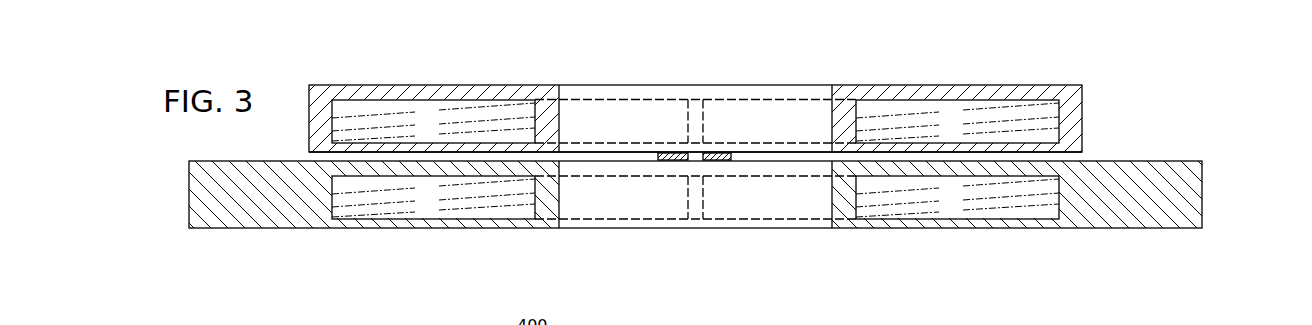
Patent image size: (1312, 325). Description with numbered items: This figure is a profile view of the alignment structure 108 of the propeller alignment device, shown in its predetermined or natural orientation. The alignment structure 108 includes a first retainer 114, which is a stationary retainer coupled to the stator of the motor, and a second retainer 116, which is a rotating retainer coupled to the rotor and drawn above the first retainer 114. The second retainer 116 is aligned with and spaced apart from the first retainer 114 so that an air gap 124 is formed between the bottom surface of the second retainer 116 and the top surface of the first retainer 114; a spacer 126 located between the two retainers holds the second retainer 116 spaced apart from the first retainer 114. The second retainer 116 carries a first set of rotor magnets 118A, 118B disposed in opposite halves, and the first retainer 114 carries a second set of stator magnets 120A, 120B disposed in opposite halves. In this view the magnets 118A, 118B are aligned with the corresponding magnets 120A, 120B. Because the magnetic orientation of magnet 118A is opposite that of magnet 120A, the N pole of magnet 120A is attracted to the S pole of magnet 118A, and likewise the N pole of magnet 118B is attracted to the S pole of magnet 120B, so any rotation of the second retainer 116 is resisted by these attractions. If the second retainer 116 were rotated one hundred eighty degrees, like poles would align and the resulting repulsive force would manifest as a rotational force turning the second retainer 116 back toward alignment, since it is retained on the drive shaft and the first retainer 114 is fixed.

The alignment structure 108 is at (1183, 107).
The first retainer 114 is at (1202, 190).
The second retainer 116 is at (1082, 105).
The magnet 118A is at (1005, 110).
The magnet 118B is at (385, 110).
The magnet 120A is at (1000, 202).
The magnet 120B is at (391, 202).
The air gap 124 is at (313, 157).
The spacer 126 is at (723, 160).